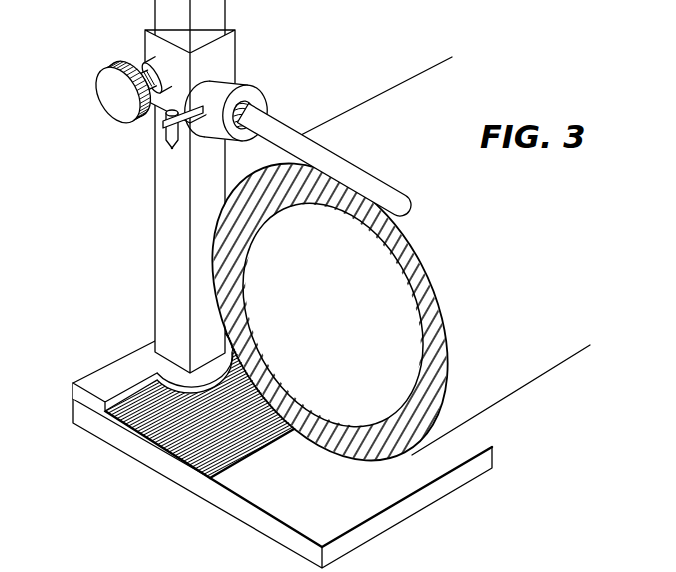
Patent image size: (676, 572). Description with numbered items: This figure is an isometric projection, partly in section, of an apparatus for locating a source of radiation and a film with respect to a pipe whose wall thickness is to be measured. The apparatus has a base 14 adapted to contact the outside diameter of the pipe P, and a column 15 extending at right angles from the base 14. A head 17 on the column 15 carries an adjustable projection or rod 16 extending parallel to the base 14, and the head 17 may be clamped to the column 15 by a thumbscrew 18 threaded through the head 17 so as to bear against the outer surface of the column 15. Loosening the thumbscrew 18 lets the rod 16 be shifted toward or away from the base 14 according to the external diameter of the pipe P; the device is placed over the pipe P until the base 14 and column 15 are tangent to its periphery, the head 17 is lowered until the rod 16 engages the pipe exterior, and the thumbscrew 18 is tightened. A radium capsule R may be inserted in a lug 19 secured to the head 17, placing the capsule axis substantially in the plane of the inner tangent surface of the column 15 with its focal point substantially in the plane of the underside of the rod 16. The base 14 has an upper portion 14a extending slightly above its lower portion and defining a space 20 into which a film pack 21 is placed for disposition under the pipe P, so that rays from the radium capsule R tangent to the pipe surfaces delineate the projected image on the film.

The base 14 is at (273, 533).
The upper portion of base 14a is at (78, 398).
The column 15 is at (156, 258).
The rod 16 is at (298, 128).
The head 17 is at (233, 62).
The thumbscrew 18 is at (98, 88).
The lug 19 is at (163, 131).
The space 20 is at (92, 409).
The film pack 21 is at (180, 462).
The pipe P is at (507, 393).
The radium capsule R is at (168, 145).